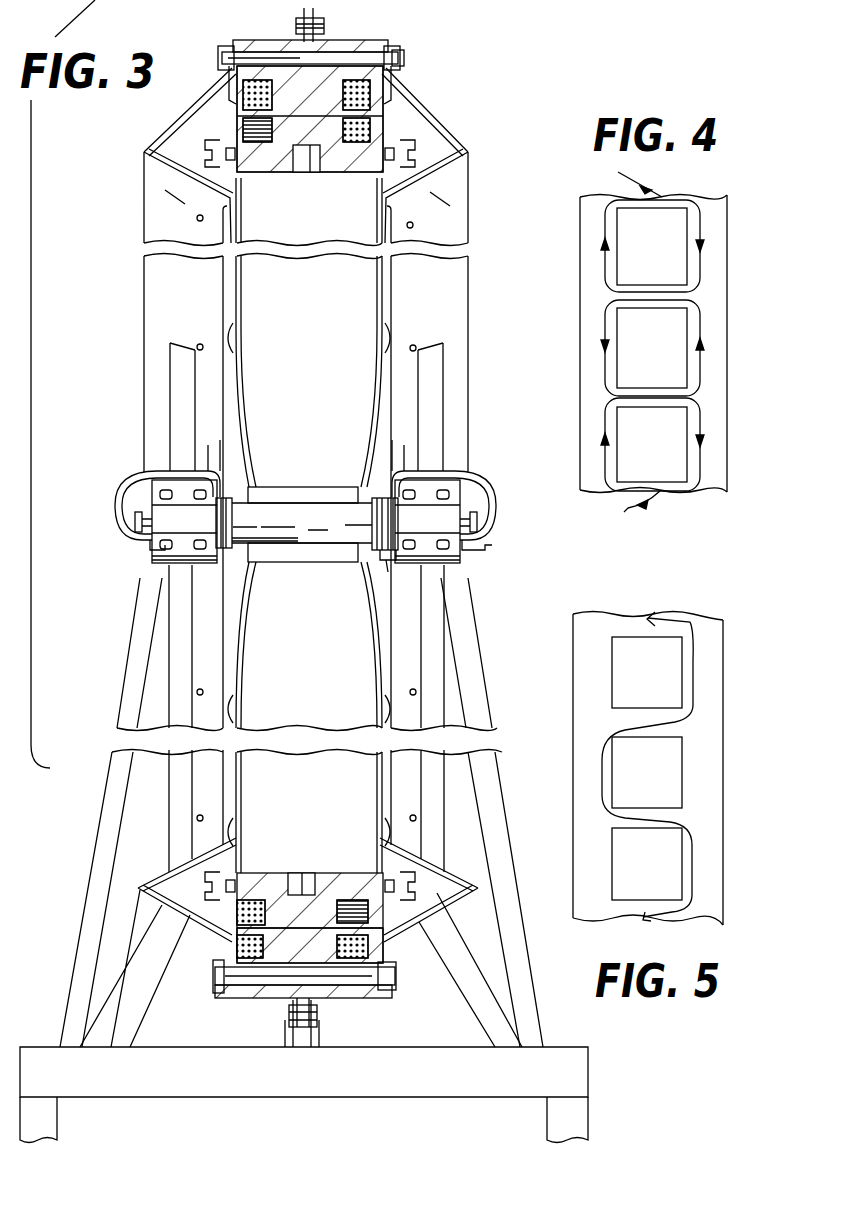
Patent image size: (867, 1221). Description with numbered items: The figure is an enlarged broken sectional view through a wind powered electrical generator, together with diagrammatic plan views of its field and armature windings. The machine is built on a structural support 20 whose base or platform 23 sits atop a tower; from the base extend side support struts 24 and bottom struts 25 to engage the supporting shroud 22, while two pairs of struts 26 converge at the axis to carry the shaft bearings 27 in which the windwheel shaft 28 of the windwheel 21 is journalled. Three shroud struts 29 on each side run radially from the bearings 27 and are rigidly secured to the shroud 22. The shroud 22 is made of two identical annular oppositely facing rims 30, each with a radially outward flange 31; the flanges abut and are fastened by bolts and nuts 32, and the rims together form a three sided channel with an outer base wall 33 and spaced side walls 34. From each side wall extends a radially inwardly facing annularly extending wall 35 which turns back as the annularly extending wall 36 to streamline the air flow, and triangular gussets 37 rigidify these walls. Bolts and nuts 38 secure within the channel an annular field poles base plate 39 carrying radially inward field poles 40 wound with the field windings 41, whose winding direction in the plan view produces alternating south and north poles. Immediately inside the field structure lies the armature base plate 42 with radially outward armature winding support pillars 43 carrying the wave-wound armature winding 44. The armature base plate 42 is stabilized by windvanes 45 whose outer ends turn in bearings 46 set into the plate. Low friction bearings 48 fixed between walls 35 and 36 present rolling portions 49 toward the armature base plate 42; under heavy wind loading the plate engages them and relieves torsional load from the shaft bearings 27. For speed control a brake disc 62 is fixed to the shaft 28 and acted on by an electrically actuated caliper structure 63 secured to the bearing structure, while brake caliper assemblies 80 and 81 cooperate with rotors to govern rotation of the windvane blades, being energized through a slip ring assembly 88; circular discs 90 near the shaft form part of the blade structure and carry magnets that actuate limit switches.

In FIG. 3, the structural support 20 is at (366, 1097).
In FIG. 3, the windwheel 21 is at (372, 150).
In FIG. 3, the supporting shroud 22 is at (144, 207).
In FIG. 3, the base or platform 23 is at (150, 1085).
In FIG. 3, the side support struts 24 is at (320, 1033).
In FIG. 3, the bottom struts 25 is at (157, 935).
In FIG. 3, the struts 26 is at (133, 674).
In FIG. 3, the shaft bearings 27 is at (160, 566).
In FIG. 3, the windwheel shaft 28 is at (290, 512).
In FIG. 3, the shroud struts 29 is at (178, 368).
In FIG. 3, the rims 30 is at (152, 281).
In FIG. 3, the flange 31 is at (314, 24).
In FIG. 3, the bolts and nuts 32 is at (296, 22).
In FIG. 3, the outer base wall 33 is at (346, 42).
In FIG. 3, the side walls 34 is at (230, 80).
In FIG. 3, the radially inwardly facing annularly extending wall 35 is at (176, 135).
In FIG. 3, the annularly extending walls 36 is at (162, 175).
In FIG. 3, the triangular gussets 37 is at (195, 947).
In FIG. 3, the bolts and nuts 38 is at (226, 50).
In FIG. 3, the field poles base plate 39 is at (250, 990).
In FIG. 4, the field poles base plate 39 is at (592, 303).
In FIG. 3, the field poles 40 is at (287, 975).
In FIG. 4, the field poles 40 is at (618, 214).
In FIG. 3, the field windings 41 is at (244, 95).
In FIG. 4, the field windings 41 is at (700, 226).
In FIG. 3, the armature base plate 42 is at (336, 166).
In FIG. 5, the armature base plate 42 is at (586, 708).
In FIG. 3, the armature winding support pillars 43 is at (285, 900).
In FIG. 5, the armature winding support pillars 43 is at (622, 668).
In FIG. 3, the armature winding 44 is at (346, 902).
In FIG. 5, the armature winding 44 is at (697, 607).
In FIG. 3, the windvanes 45 is at (366, 296).
In FIG. 3, the bearings 46 is at (306, 168).
In FIG. 3, the bearings 48 is at (205, 150).
In FIG. 3, the low friction rolling portion 49 is at (236, 158).
In FIG. 3, the disc 62 is at (380, 497).
In FIG. 3, the caliper structure 63 is at (380, 556).
In FIG. 3, the brake caliper assembly 80 is at (133, 547).
In FIG. 3, the brake caliper assembly 81 is at (480, 548).
In FIG. 3, the slip ring assembly 88 is at (233, 517).
In FIG. 3, the circular discs 90 is at (310, 488).